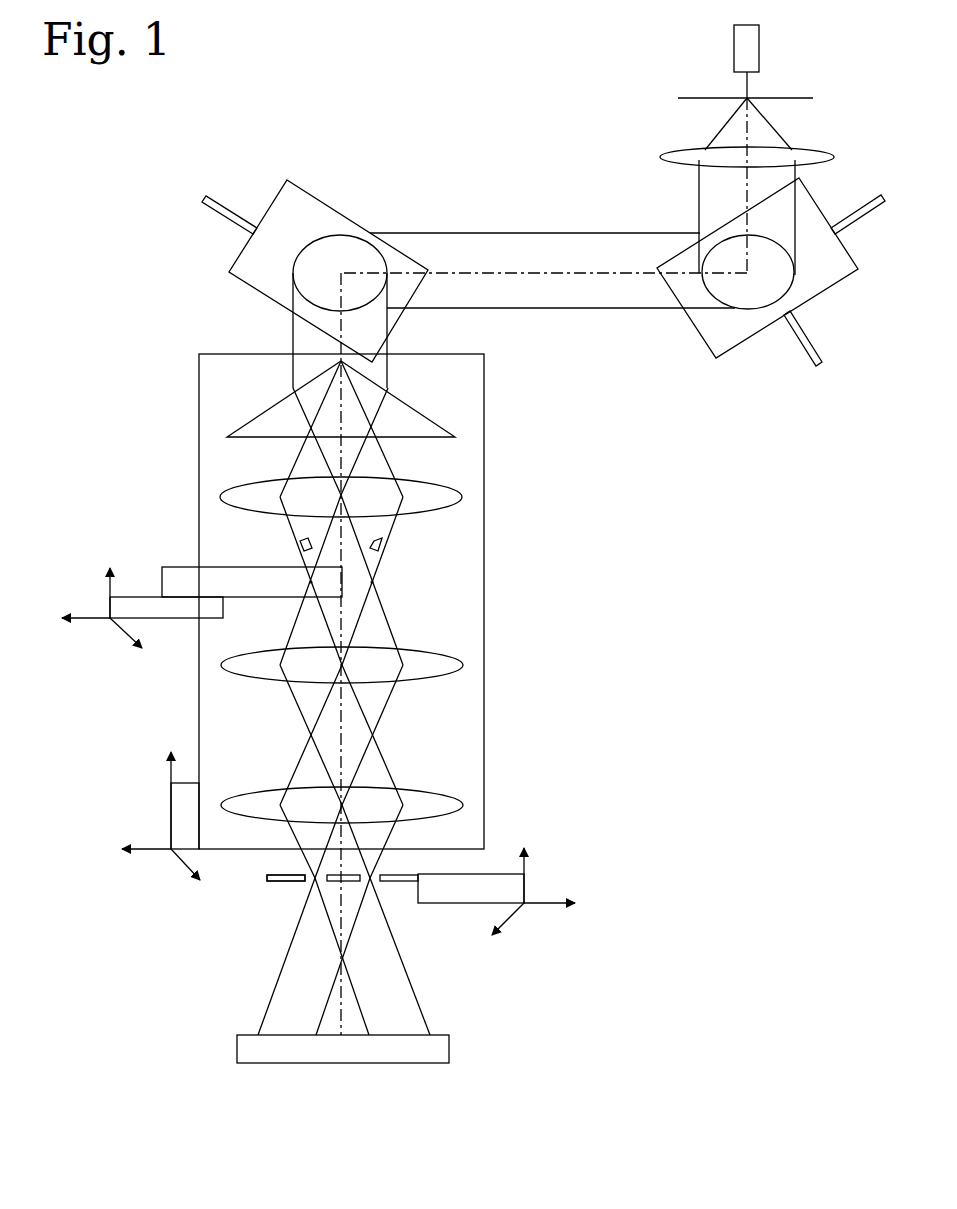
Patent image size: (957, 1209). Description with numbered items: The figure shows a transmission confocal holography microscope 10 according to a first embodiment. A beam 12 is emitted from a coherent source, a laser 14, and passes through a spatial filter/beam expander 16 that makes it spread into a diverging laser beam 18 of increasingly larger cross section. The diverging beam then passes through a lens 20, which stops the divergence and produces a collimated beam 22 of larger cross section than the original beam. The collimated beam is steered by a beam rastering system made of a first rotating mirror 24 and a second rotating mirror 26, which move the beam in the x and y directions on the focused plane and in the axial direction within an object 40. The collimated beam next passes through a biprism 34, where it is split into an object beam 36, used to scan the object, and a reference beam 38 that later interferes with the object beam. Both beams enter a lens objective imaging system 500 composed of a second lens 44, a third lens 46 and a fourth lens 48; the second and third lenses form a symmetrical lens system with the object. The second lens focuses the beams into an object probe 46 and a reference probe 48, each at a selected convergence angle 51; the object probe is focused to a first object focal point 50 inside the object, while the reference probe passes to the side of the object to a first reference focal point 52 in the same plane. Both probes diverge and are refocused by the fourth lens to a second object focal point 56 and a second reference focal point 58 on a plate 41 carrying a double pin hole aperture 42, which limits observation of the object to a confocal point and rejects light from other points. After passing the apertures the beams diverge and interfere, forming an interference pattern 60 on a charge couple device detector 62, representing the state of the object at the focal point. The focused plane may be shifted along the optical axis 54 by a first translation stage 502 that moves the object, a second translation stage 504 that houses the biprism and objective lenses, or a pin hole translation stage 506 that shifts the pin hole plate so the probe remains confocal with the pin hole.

The transmission confocal holography microscope 10 is at (780, 503).
The beam 12 is at (748, 80).
The laser 14 is at (760, 50).
The spatial filter/beam expander 16 is at (800, 97).
The diverging laser beam 18 is at (778, 135).
The lens 20 is at (833, 157).
The collimated beam 22 is at (797, 168).
The first rotating mirror 24 is at (851, 251).
The second rotating mirror 26 is at (308, 195).
The biprism 34 is at (410, 405).
The object beam 36 is at (303, 470).
The reference beam 38 is at (379, 470).
The object 40 is at (170, 567).
The plate 41 is at (270, 874).
The double pin hole aperture 42 is at (313, 882).
The second lens 44 is at (462, 497).
The third lens / object probe 46 is at (305, 537).
The fourth lens / reference probe 48 is at (378, 537).
The first object focal point 50 is at (305, 582).
The convergence angle 51 is at (303, 545).
The first reference focal point 52 is at (372, 582).
The optical axis 54 is at (345, 718).
The second object focal point 56 is at (371, 876).
The second reference focal point 58 is at (315, 877).
The interference pattern 60 is at (345, 1028).
The charge couple device detector 62 is at (449, 1045).
The lens objective imaging system 500 is at (484, 595).
The first translation stage 502 is at (110, 608).
The second translation stage 504 is at (171, 820).
The pin hole translation stage 506 is at (524, 888).